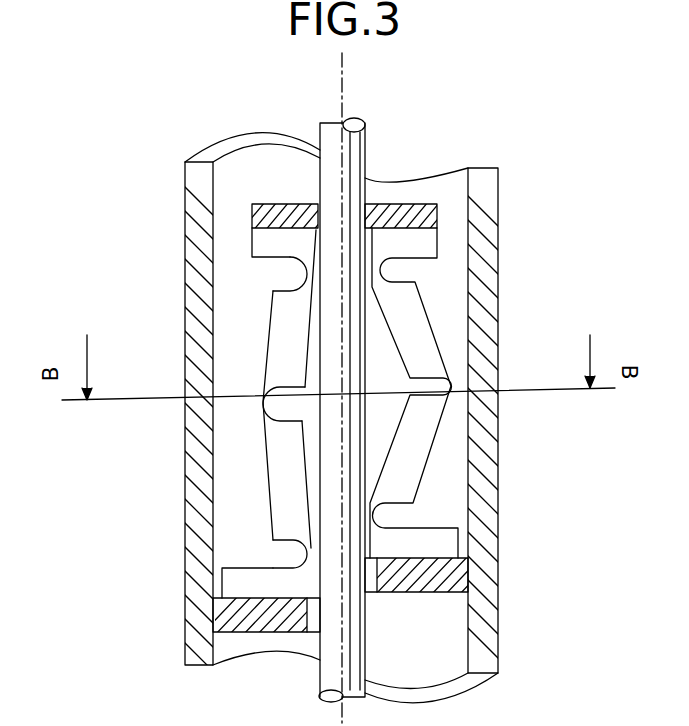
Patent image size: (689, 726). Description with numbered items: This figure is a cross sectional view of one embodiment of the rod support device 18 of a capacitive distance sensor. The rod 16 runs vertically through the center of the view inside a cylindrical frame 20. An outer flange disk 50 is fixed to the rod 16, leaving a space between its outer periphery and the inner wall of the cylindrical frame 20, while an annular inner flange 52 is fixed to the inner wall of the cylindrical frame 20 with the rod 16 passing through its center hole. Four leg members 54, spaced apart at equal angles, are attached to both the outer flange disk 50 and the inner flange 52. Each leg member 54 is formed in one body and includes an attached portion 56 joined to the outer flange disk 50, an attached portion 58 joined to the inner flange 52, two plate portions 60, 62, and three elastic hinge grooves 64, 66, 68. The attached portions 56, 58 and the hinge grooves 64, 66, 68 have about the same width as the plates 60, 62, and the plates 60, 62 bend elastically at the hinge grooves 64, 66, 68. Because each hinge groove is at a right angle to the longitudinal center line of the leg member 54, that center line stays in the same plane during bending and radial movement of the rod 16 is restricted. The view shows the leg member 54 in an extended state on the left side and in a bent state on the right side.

The rod 16 is at (367, 143).
The rod support device 18 is at (180, 138).
The cylindrical frame 20 is at (485, 203).
The outer flange disk 50 is at (398, 203).
The annular inner flange 52 is at (230, 613).
The leg member 54 is at (327, 380).
The attached portion 56 is at (186, 166).
The attached portion 58 is at (230, 582).
The plate portion 60 is at (305, 283).
The plate portion 62 is at (283, 474).
The hinge groove 64 is at (265, 241).
The hinge groove 66 is at (262, 400).
The hinge groove 68 is at (310, 555).